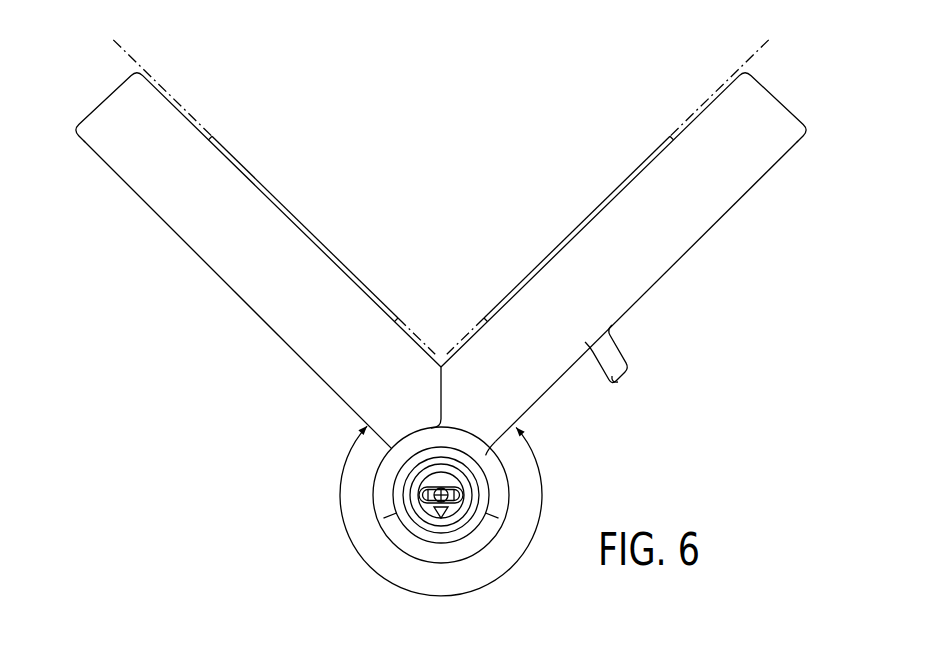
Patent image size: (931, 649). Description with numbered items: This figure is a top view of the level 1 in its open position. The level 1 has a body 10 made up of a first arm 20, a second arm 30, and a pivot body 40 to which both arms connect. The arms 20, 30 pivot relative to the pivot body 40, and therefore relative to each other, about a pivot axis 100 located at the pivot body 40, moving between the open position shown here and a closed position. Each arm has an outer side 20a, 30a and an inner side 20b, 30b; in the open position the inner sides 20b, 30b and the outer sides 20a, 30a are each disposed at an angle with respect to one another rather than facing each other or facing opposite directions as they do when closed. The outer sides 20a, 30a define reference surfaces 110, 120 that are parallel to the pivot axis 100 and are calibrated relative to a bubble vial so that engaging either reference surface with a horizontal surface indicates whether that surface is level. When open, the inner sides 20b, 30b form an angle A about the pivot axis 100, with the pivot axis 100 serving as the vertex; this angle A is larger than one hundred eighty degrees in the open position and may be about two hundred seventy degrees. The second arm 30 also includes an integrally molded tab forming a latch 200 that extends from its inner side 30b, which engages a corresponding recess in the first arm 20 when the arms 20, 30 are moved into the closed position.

The level 1 is at (441, 295).
The body 10 is at (310, 105).
The first arm 20 is at (192, 223).
The outer side 20a is at (338, 257).
The inner side 20b is at (267, 323).
The second arm 30 is at (675, 237).
The outer side 30a is at (582, 222).
The inner side 30b is at (730, 210).
The pivot body 40 is at (402, 542).
The pivot axis 100 is at (445, 491).
The reference surface 110 is at (141, 63).
The reference surface 120 is at (740, 63).
The latch 200 is at (629, 373).
The angle A is at (542, 483).